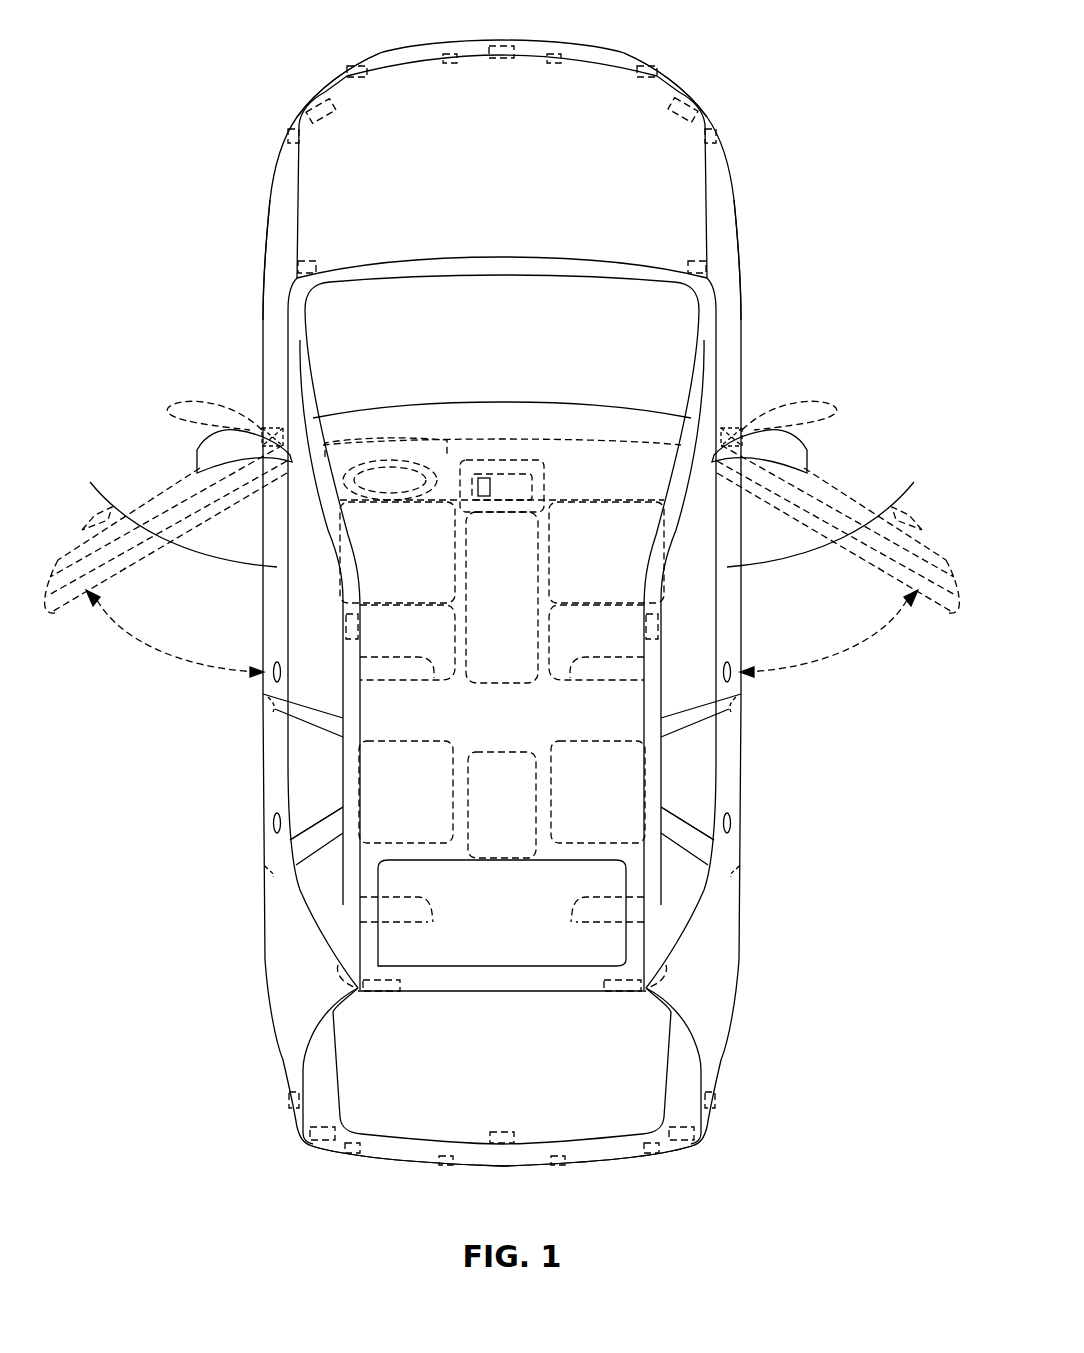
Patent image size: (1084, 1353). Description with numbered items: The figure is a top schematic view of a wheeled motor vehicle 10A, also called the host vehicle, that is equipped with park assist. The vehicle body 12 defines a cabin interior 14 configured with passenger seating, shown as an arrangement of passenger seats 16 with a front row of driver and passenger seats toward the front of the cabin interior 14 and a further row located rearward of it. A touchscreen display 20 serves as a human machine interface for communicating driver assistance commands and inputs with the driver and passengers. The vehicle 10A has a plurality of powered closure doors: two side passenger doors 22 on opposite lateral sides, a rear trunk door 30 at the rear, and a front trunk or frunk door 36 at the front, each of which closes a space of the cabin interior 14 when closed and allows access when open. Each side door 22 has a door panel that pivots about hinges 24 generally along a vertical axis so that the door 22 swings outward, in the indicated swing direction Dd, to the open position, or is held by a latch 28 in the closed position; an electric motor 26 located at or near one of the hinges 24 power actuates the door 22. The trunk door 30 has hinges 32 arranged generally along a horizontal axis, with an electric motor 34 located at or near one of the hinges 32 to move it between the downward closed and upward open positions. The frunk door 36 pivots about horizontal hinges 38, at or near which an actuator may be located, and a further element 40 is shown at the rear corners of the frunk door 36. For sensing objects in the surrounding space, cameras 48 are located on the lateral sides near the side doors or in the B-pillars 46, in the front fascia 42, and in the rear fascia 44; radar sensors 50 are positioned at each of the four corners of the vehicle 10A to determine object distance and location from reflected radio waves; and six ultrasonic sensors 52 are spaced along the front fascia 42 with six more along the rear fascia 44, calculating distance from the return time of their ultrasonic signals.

The motor vehicle 10A is at (808, 45).
The vehicle body 12 is at (292, 912).
The cabin interior 14 is at (337, 457).
The passenger seats 16 is at (378, 560).
The touchscreen display 20 is at (585, 465).
The side passenger doors 22 is at (153, 483).
The hinges 24 is at (270, 435).
The electric motor 26 is at (240, 400).
The latch 28 is at (265, 700).
The rear trunk door 30 is at (570, 1060).
The hinges 32 is at (375, 993).
The electric motor 34 is at (340, 963).
The front trunk door 36 is at (595, 178).
The horizontal hinges 38 is at (297, 280).
The hood sensor 40 is at (300, 262).
The front fascia 42 is at (378, 50).
The rear fascia 44 is at (395, 1165).
The B-pillars 46 is at (322, 730).
The cameras 48 is at (505, 60).
The radar sensors 50 is at (308, 102).
The ultrasonic sensors 52 is at (290, 132).
The door opening direction Dd is at (502, 633).